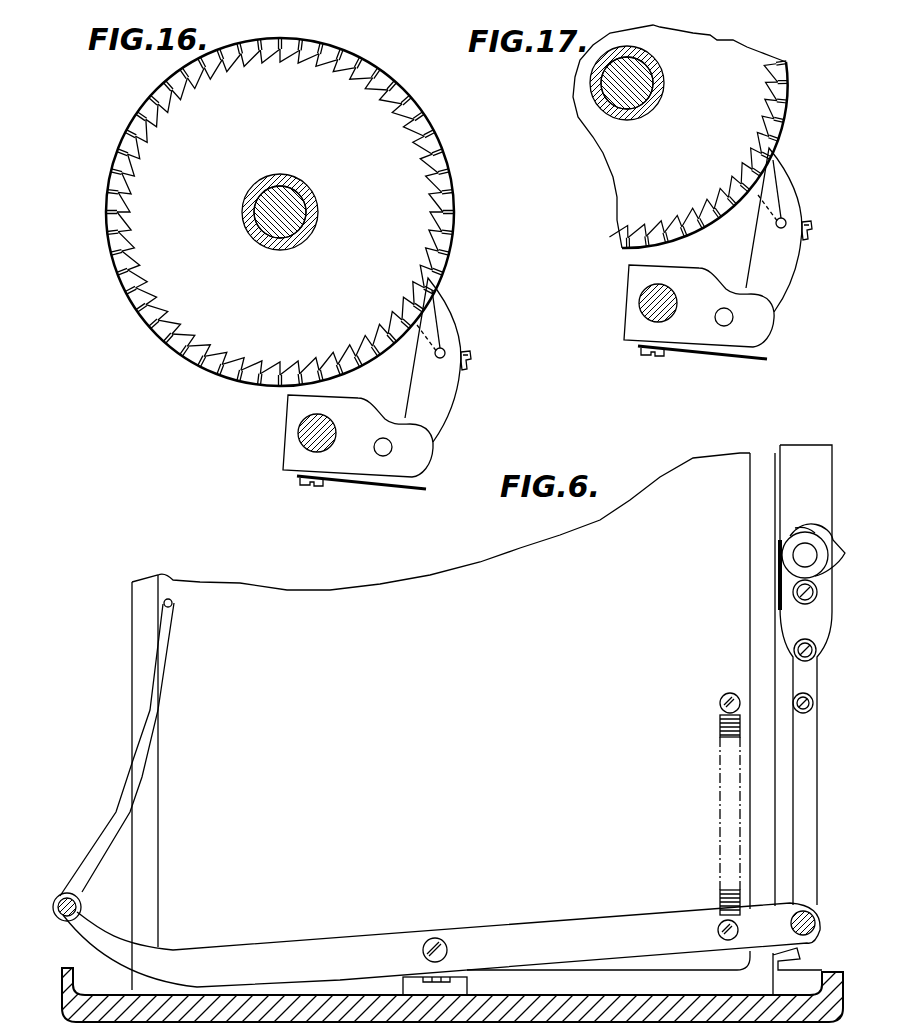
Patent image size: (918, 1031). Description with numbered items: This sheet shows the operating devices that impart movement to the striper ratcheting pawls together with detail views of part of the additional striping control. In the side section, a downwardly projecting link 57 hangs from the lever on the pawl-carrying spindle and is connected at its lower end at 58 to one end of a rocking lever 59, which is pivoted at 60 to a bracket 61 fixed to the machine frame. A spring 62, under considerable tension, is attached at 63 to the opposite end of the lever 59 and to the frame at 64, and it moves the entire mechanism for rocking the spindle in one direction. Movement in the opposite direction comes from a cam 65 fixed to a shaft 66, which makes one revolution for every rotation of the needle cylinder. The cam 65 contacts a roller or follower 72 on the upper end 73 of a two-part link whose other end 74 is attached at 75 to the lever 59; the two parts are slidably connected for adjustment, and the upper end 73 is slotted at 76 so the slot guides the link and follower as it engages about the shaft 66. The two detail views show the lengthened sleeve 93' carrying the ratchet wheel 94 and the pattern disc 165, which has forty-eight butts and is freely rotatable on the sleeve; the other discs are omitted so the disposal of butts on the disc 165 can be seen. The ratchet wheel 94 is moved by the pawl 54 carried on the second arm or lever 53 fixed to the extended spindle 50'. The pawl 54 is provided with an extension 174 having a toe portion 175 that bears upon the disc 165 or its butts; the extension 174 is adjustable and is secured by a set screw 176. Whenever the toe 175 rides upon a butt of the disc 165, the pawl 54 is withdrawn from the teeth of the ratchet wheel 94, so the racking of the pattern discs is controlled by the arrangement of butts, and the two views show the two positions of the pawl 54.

In FIG. 16, the lengthened sleeve 93' is at (301, 211).
In FIG. 17, the lengthened sleeve 93' is at (649, 83).
In FIG. 16, the ratchet wheel 94 is at (280, 212).
In FIG. 17, the ratchet wheel 94 is at (680, 136).
In FIG. 16, the pattern disc 165 is at (452, 235).
In FIG. 17, the pattern disc 165 is at (776, 135).
In FIG. 16, the second pawl 54 is at (443, 404).
In FIG. 17, the second pawl 54 is at (781, 288).
In FIG. 16, the extension 174 is at (445, 349).
In FIG. 17, the extension 174 is at (785, 219).
In FIG. 16, the toe portion 175 is at (418, 332).
In FIG. 17, the toe portion 175 is at (759, 202).
In FIG. 16, the set screw 176 is at (472, 364).
In FIG. 17, the set screw 176 is at (809, 240).
In FIG. 16, the second arm or lever 53 is at (358, 442).
In FIG. 17, the second arm or lever 53 is at (699, 312).
In FIG. 16, the extended spindle 50' is at (287, 433).
In FIG. 17, the extended spindle 50' is at (636, 306).
In FIG. 6, the link 57 is at (160, 641).
In FIG. 6, the connection 58 is at (78, 907).
In FIG. 6, the rocking lever 59 is at (441, 945).
In FIG. 6, the pivot 60 is at (447, 950).
In FIG. 6, the bracket 61 is at (462, 985).
In FIG. 6, the spring 62 is at (720, 733).
In FIG. 6, the spring attachment 63 is at (718, 931).
In FIG. 6, the frame attachment 64 is at (728, 693).
In FIG. 6, the cam 65 is at (833, 540).
In FIG. 6, the shaft 66 is at (795, 556).
In FIG. 6, the roller follower 72 is at (805, 604).
In FIG. 6, the upper link end 73 is at (818, 634).
In FIG. 6, the lower link end 74 is at (808, 820).
In FIG. 6, the link attachment 75 is at (815, 916).
In FIG. 6, the slot 76 is at (803, 527).